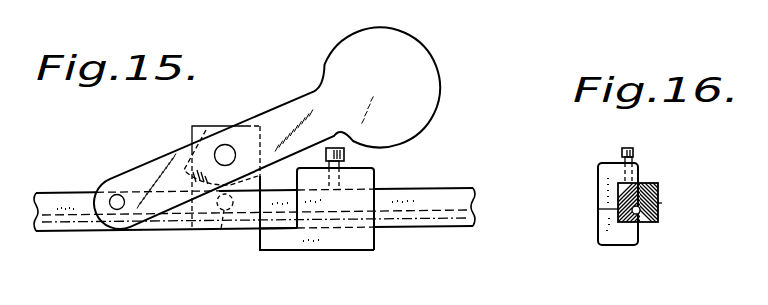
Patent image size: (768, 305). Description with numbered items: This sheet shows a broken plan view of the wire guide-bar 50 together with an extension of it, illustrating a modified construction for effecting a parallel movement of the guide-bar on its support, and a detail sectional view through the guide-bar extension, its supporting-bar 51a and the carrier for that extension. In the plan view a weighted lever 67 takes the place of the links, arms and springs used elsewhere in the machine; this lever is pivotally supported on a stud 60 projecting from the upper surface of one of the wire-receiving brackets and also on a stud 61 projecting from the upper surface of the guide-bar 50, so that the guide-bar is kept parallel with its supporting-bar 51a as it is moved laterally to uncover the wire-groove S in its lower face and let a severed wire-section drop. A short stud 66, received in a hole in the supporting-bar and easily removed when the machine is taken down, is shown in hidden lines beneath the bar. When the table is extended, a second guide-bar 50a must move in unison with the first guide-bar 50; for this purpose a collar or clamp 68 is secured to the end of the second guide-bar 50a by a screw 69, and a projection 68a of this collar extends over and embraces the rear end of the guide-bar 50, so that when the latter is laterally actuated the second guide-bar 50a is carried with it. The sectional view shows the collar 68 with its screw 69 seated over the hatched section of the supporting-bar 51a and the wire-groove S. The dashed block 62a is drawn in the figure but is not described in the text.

In FIG. 15, the guide-bar 50 is at (58, 193).
In FIG. 16, the guide-bar 50 is at (598, 209).
In FIG. 15, the second guide-bar 50a is at (476, 182).
In FIG. 16, the supporting-bar 51a is at (658, 190).
In FIG. 15, the studs 60 is at (222, 152).
In FIG. 15, the studs 61 is at (116, 198).
In FIG. 15, the cam block 62a is at (177, 149).
In FIG. 15, the short studs 66 is at (219, 232).
In FIG. 15, the weighted lever 67 is at (281, 110).
In FIG. 15, the collar or clamp 68 is at (374, 237).
In FIG. 16, the collar or clamp 68 is at (598, 183).
In FIG. 15, the projection of the collar 68a is at (279, 250).
In FIG. 15, the screw 69 is at (341, 165).
In FIG. 16, the screw 69 is at (639, 152).
In FIG. 16, the wire-groove S is at (662, 203).